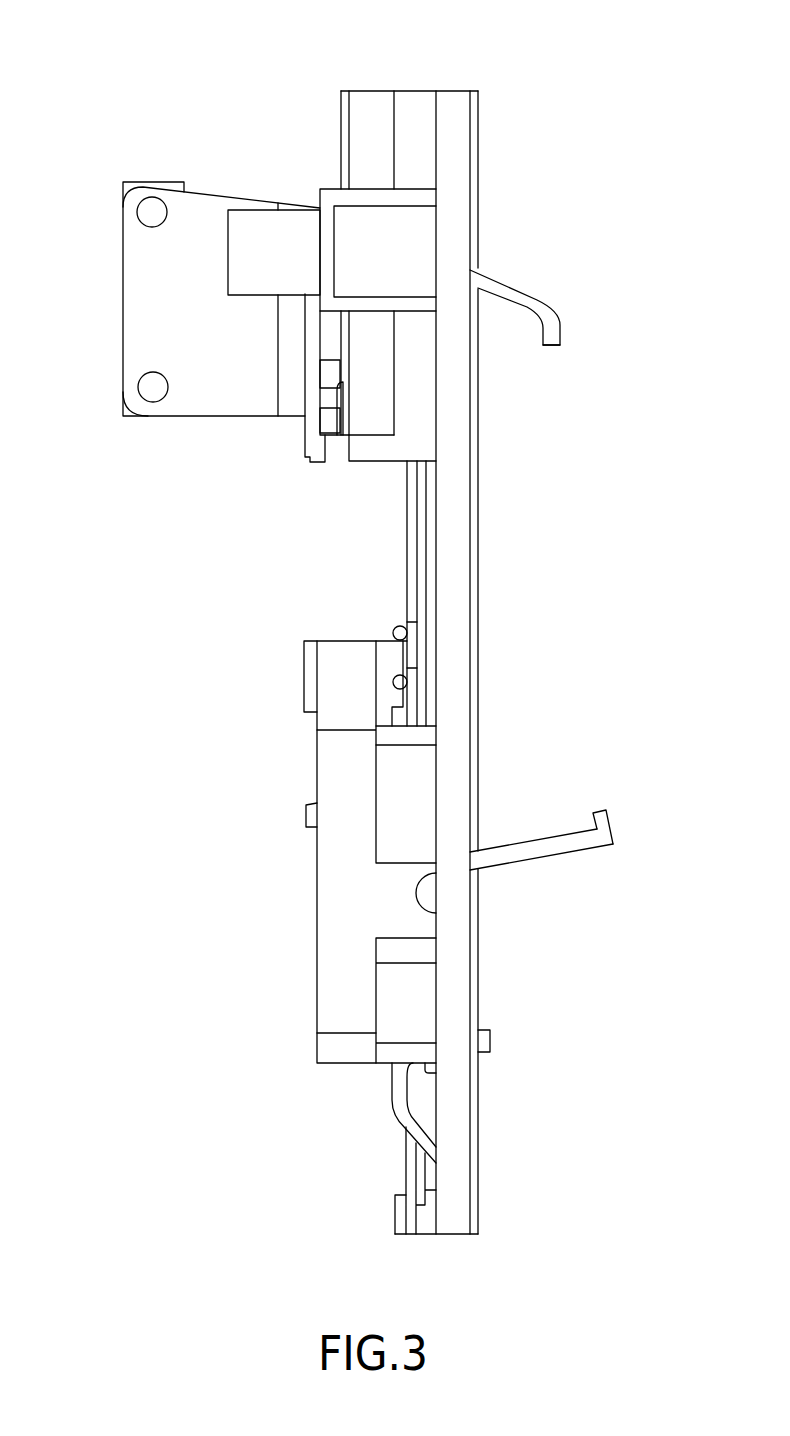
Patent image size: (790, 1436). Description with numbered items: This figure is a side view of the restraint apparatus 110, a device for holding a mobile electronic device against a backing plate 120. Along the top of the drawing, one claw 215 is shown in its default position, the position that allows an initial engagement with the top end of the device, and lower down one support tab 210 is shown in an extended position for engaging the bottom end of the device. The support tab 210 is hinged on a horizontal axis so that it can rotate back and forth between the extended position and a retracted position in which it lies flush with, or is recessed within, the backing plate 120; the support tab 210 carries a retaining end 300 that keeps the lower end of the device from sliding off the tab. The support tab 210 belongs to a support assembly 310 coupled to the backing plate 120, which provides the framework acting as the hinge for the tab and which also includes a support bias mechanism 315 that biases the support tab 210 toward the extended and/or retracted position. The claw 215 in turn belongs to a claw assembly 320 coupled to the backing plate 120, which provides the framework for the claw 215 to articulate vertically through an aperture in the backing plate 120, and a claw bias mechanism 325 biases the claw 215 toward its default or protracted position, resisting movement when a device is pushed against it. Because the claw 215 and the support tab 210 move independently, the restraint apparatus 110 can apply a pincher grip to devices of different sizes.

The restraint apparatus 110 is at (136, 31).
The backing plate 120 is at (413, 105).
The support tab 210 is at (540, 852).
The claw 215 is at (530, 293).
The retaining end 300 is at (555, 332).
The support assembly 310 is at (290, 640).
The support bias mechanism 315 is at (346, 657).
The claw assembly 320 is at (107, 168).
The claw bias mechanism 325 is at (257, 222).